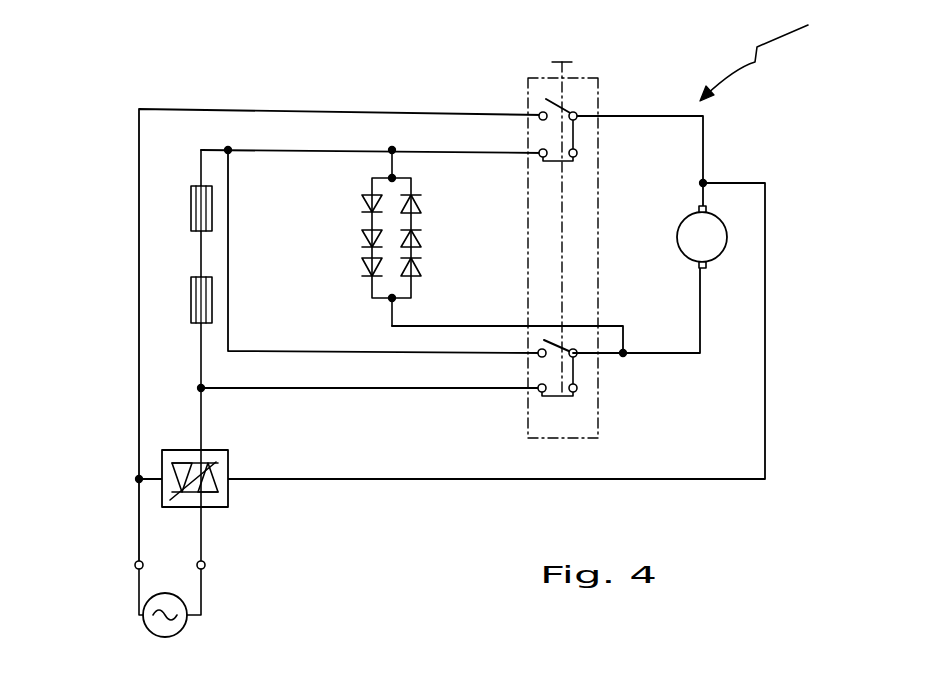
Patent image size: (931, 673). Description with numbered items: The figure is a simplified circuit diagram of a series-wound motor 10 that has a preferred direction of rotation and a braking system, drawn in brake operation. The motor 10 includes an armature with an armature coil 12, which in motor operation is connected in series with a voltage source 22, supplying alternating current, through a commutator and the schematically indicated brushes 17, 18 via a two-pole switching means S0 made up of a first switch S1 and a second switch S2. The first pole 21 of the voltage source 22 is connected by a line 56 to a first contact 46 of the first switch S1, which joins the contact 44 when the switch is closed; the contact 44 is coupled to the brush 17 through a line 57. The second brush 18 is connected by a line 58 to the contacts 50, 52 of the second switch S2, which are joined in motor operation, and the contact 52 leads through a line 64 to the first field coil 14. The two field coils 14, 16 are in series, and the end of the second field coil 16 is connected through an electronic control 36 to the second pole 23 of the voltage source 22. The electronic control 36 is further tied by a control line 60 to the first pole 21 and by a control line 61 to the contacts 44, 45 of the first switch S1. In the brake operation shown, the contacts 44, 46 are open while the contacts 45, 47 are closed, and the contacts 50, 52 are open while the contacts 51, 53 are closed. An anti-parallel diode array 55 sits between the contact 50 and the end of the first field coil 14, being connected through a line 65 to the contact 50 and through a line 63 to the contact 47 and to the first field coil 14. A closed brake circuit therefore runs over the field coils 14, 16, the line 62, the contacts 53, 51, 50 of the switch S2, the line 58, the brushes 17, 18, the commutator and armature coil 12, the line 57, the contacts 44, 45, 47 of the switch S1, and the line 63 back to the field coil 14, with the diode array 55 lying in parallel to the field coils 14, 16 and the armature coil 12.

The series-wound motor 10 is at (770, 53).
The armature coil 12 is at (751, 212).
The first field coil 14 is at (195, 210).
The second field coil 16 is at (195, 300).
The brush 17 is at (707, 208).
The second brush 18 is at (707, 268).
The first pole 21 is at (133, 568).
The voltage source 22 is at (172, 625).
The second pole 23 is at (205, 567).
The electronic control 36 is at (232, 500).
The contact 44 is at (582, 110).
The contact 45 is at (578, 157).
The first contact 46 is at (540, 112).
The contact 47 is at (540, 150).
The contact 50 is at (577, 350).
The contact 51 is at (578, 392).
The contact 52 is at (538, 358).
The contact 53 is at (528, 438).
The anti-parallel diode array 55 is at (392, 233).
The line 56 is at (192, 109).
The line 57 is at (732, 128).
The line 58 is at (700, 312).
The control line 60 is at (150, 479).
The control line 61 is at (765, 393).
The line 62 is at (320, 388).
The line 63 is at (330, 150).
The line 64 is at (268, 351).
The line 65 is at (468, 326).
The switching means S0 is at (590, 275).
The first switch S1 is at (572, 107).
The second switch S2 is at (562, 371).